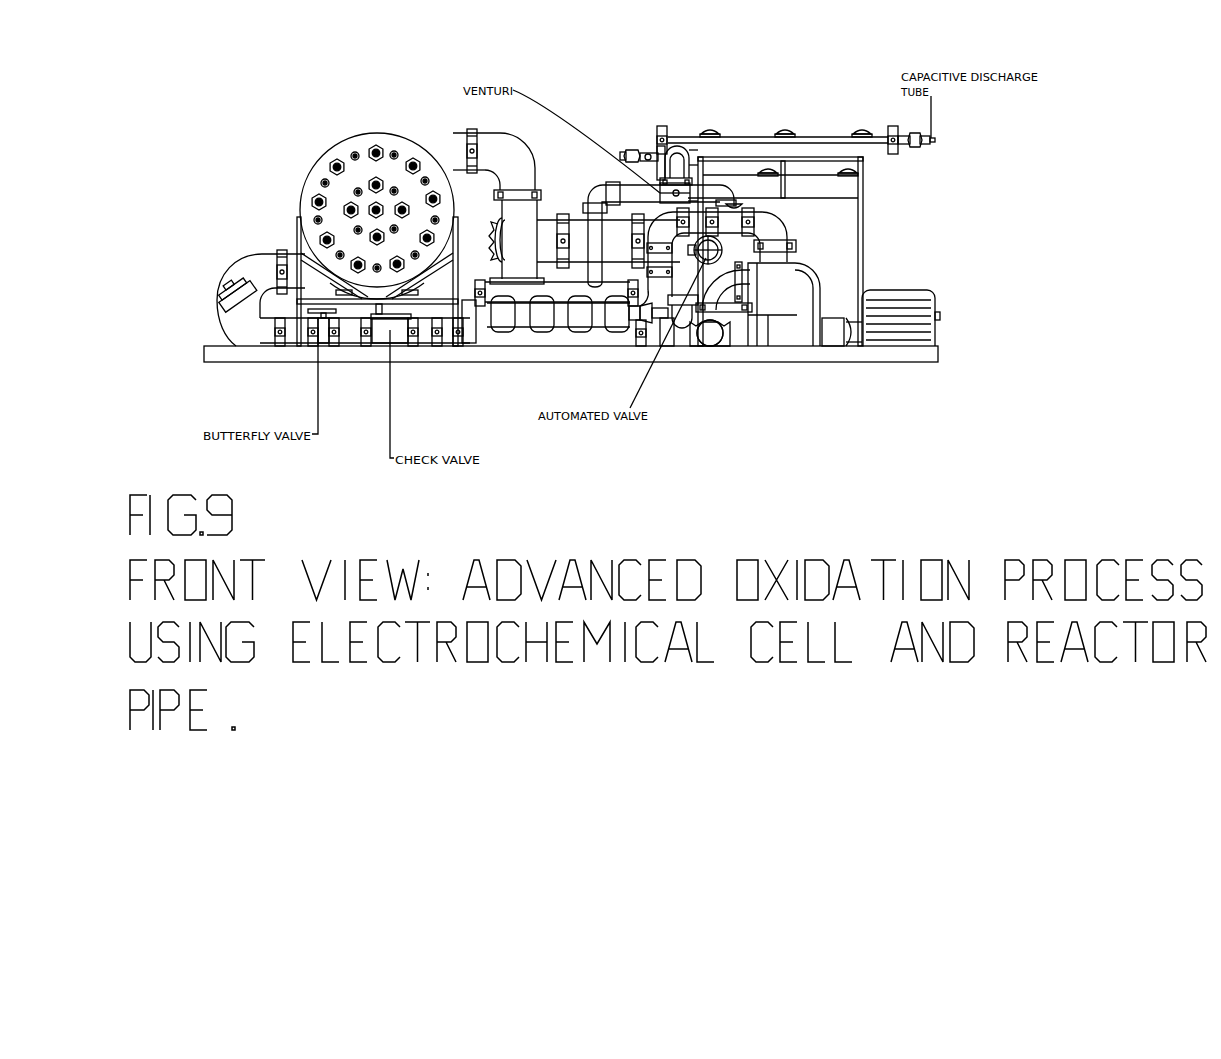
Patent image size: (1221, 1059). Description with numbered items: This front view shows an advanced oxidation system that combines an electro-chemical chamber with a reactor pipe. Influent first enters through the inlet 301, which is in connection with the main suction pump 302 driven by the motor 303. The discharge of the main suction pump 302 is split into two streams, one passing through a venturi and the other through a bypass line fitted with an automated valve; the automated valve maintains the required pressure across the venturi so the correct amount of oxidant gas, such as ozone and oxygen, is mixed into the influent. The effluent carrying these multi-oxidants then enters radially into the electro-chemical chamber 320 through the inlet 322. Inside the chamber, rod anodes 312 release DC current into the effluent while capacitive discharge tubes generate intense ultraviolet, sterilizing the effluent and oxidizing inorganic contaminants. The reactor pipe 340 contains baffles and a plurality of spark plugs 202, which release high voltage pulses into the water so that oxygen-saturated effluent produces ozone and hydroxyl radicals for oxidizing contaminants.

The electro-chemical chamber 320 is at (371, 133).
The inlet 322 is at (370, 150).
The rod anodes 312 is at (322, 182).
The spark plugs 202 is at (860, 134).
The reactor pipe 340 is at (820, 251).
The motor 303 is at (895, 308).
The inlet 301 is at (712, 338).
The main suction pump 302 is at (712, 338).